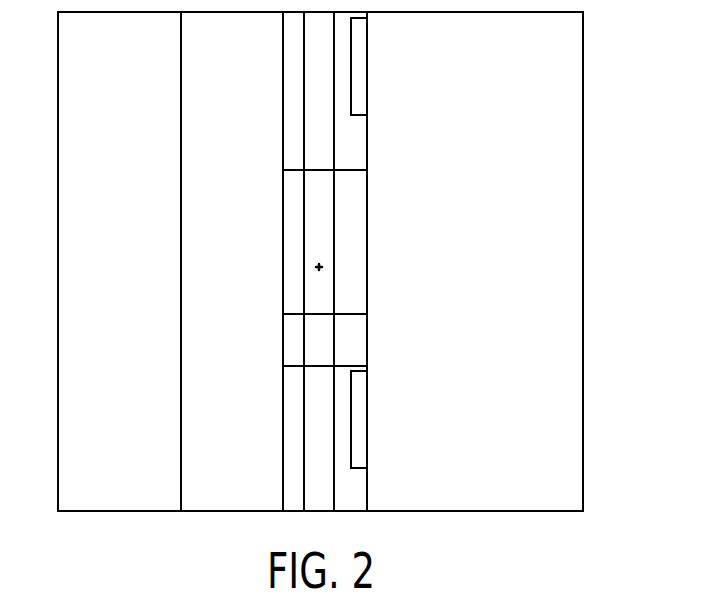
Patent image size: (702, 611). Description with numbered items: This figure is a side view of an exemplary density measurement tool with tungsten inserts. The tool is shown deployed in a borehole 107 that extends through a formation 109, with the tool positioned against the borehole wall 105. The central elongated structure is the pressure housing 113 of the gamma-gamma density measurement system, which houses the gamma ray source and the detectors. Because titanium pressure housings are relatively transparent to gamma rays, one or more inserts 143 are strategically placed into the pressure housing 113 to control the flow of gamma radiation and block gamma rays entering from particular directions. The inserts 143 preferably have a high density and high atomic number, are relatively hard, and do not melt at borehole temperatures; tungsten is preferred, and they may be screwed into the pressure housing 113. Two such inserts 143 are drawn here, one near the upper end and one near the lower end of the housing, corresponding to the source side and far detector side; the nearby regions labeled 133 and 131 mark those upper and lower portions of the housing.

The borehole wall 105 is at (180, 163).
The borehole 107 is at (188, 230).
The formation 109 is at (72, 293).
The pressure housing 113 is at (286, 390).
The lower region 131 is at (362, 484).
The upper region 133 is at (362, 137).
The inserts 143 is at (362, 72).